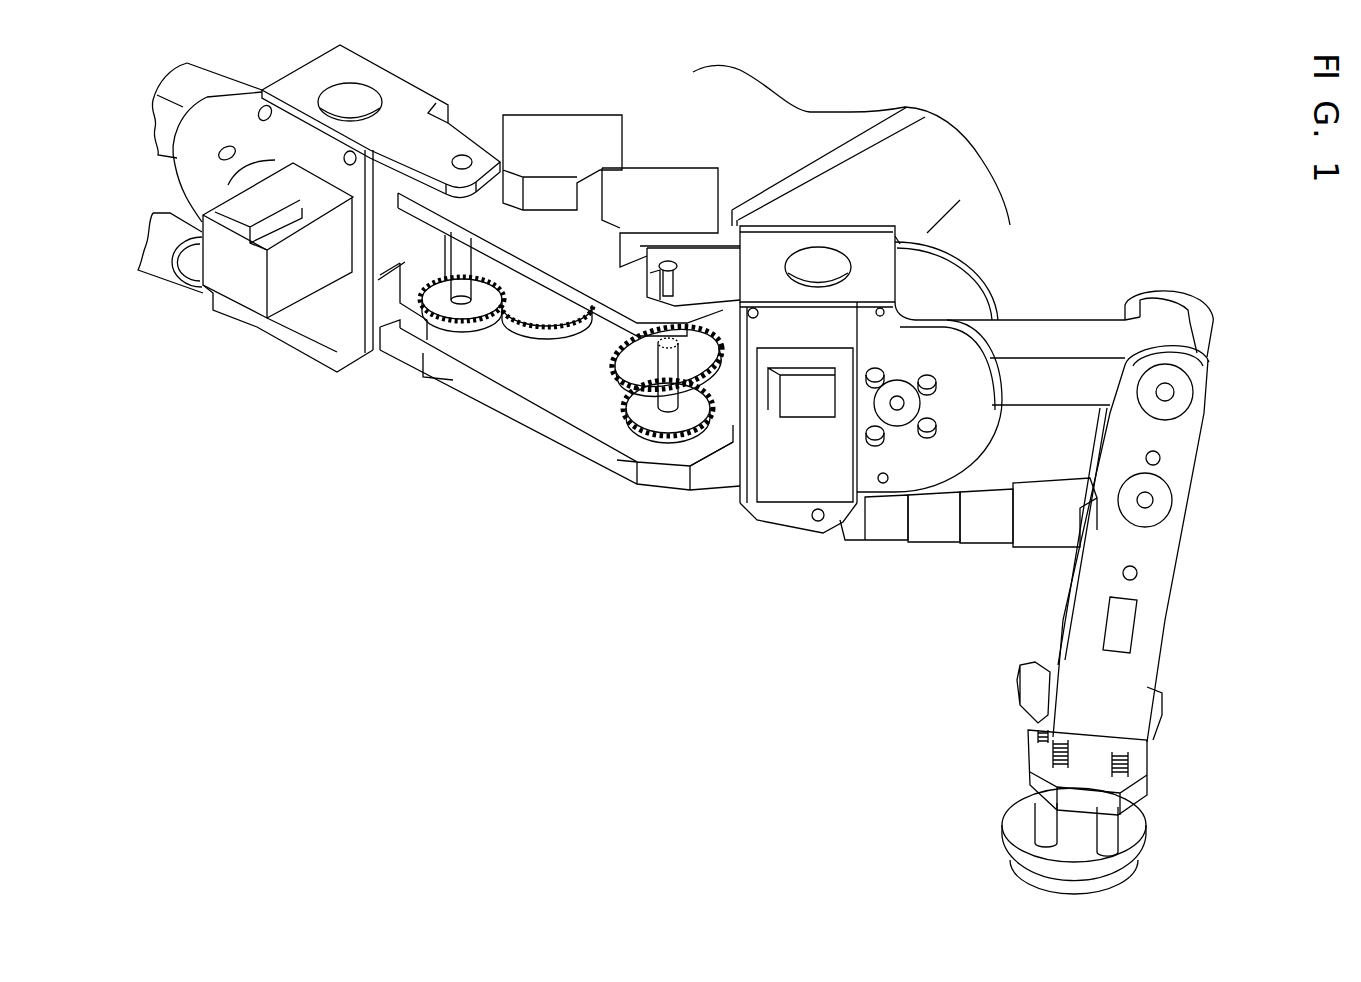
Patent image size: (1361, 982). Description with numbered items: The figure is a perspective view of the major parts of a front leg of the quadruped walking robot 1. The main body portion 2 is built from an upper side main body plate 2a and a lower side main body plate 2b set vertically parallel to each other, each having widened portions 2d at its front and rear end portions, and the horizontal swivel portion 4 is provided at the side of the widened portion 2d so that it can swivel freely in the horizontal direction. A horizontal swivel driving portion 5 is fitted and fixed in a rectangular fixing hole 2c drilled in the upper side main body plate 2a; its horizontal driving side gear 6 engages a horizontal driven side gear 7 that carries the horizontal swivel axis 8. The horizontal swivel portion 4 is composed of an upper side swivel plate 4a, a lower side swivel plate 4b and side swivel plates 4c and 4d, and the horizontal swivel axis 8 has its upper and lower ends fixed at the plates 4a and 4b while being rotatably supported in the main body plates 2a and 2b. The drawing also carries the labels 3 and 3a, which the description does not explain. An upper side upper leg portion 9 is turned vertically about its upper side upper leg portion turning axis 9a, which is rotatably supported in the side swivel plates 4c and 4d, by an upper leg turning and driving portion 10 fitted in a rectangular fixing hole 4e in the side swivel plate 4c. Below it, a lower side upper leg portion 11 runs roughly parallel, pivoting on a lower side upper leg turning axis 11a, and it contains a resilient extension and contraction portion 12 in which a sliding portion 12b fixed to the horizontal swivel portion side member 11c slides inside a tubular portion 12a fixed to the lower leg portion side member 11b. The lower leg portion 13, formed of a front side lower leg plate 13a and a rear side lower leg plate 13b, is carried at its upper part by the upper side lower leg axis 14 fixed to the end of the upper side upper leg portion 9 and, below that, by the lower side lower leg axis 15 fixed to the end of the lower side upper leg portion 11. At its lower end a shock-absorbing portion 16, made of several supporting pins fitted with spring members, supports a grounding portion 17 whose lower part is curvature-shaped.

The quadruped walking robot 1 is at (1127, 137).
The main body portion 2 is at (803, 135).
The upper side main body plate 2a is at (670, 128).
The lower side main body plate 2b is at (505, 365).
The rectangular fixing hole 2c is at (597, 232).
The widened portion 2d is at (620, 330).
The arm unit 3 is at (1175, 257).
The mounting plate 3a is at (502, 67).
The horizontal swivel portion 4 is at (1022, 248).
The upper side swivel plate 4a is at (868, 242).
The lower side swivel plate 4b is at (710, 482).
The side swivel plate 4c is at (913, 462).
The side swivel plate 4d is at (968, 293).
The rectangular fixing hole 4e is at (902, 243).
The horizontal swivel driving portion 5 is at (683, 207).
The horizontal driving side gear 6 is at (633, 360).
The horizontal driven side gear 7 is at (617, 417).
The horizontal swivel axis 8 is at (667, 400).
The upper side upper leg portion 9 is at (1070, 340).
The upper side upper leg portion turning axis 9a is at (897, 403).
The upper leg turning and driving portion 10 is at (787, 482).
The lower side upper leg portion 11 is at (827, 565).
The lower side upper leg turning axis 11a is at (813, 520).
The lower leg portion side member 11b is at (1047, 535).
The horizontal swivel portion side member 11c is at (867, 547).
The resilient extension and contraction portion 12 is at (955, 572).
The tubular portion 12a is at (987, 528).
The sliding portion 12b is at (937, 528).
The lower leg portion 13 is at (1232, 500).
The front side lower leg plate 13a is at (1190, 440).
The rear side lower leg plate 13b is at (1208, 338).
The upper side lower leg axis 14 is at (1167, 392).
The lower side lower leg axis 15 is at (1147, 500).
The shock-absorbing portion 16 is at (1140, 760).
The grounding portion 17 is at (1110, 878).